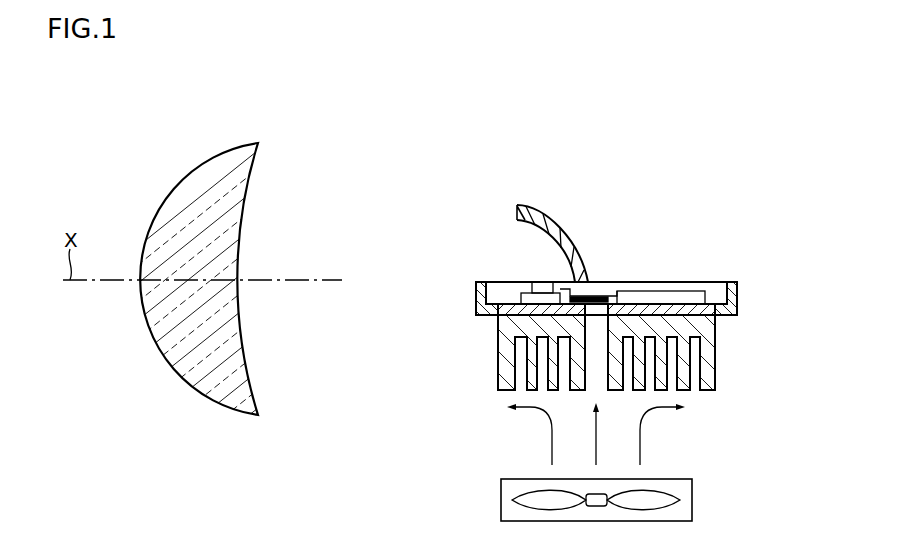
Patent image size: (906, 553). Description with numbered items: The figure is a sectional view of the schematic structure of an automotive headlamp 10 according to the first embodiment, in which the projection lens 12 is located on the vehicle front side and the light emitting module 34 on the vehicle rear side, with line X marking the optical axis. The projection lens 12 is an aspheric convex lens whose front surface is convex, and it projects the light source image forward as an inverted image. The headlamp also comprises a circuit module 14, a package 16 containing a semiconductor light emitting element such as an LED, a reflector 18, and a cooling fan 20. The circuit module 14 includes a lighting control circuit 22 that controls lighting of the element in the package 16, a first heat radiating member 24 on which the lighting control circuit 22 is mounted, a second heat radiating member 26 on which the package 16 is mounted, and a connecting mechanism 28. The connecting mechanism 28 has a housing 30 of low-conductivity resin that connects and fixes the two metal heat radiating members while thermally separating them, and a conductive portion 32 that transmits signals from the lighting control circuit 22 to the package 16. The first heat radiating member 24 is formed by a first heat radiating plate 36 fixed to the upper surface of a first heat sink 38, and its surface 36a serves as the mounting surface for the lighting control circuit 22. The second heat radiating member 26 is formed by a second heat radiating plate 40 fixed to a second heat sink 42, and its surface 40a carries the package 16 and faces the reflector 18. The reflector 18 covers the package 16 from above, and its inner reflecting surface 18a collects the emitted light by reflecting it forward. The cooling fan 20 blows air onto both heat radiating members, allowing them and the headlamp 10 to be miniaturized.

The automotive headlamp 10 is at (551, 133).
The projection lens 12 is at (191, 171).
The circuit module 14 is at (662, 272).
The light emitting module 34 is at (610, 236).
The package 16 is at (538, 272).
The reflector 18 is at (535, 224).
The reflecting surface 18a is at (524, 222).
The cooling fan 20 is at (693, 500).
The lighting control circuit 22 is at (682, 288).
The first heat radiating member 24 is at (655, 321).
The second heat radiating member 26 is at (538, 314).
The connecting mechanism 28 is at (597, 280).
The housing 30 is at (737, 293).
The conductive portion 32 is at (607, 288).
The first heat radiating plate 36 is at (698, 289).
The surface of first heat radiating plate 36a is at (717, 288).
The first heat sink 38 is at (717, 342).
The second heat radiating plate 40 is at (504, 285).
The surface of second heat radiating plate 40a is at (504, 303).
The second heat sink 42 is at (498, 338).